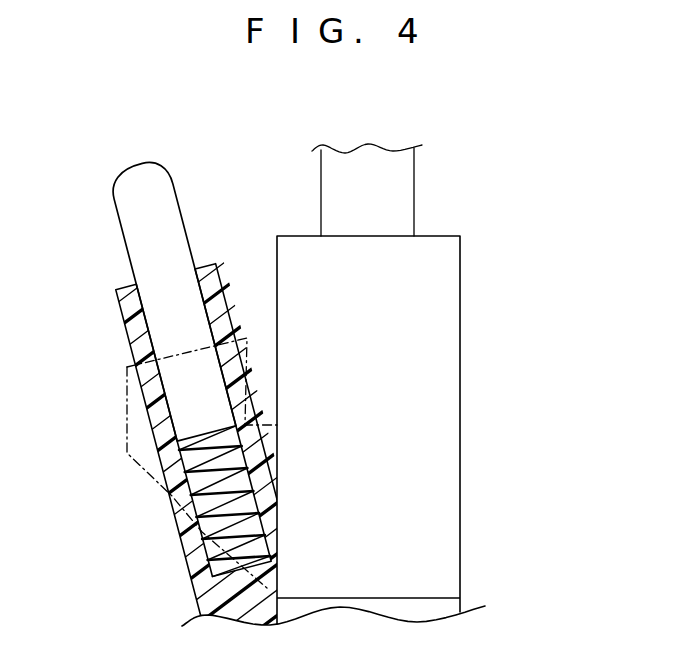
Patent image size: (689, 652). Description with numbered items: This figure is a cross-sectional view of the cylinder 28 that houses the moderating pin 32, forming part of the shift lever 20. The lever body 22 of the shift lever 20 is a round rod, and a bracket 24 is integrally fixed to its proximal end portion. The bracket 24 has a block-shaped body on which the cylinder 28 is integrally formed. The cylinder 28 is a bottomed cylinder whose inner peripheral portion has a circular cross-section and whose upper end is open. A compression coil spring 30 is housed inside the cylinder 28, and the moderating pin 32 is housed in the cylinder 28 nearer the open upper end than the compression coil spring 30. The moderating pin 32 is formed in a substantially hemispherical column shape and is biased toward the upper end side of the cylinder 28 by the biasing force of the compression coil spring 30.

The shift lever 20 is at (360, 385).
The lever body 22 is at (395, 211).
The bracket 24 is at (430, 331).
The cylinder 28 is at (126, 313).
The compression coil spring 30 is at (200, 505).
The moderating pin 32 is at (162, 205).